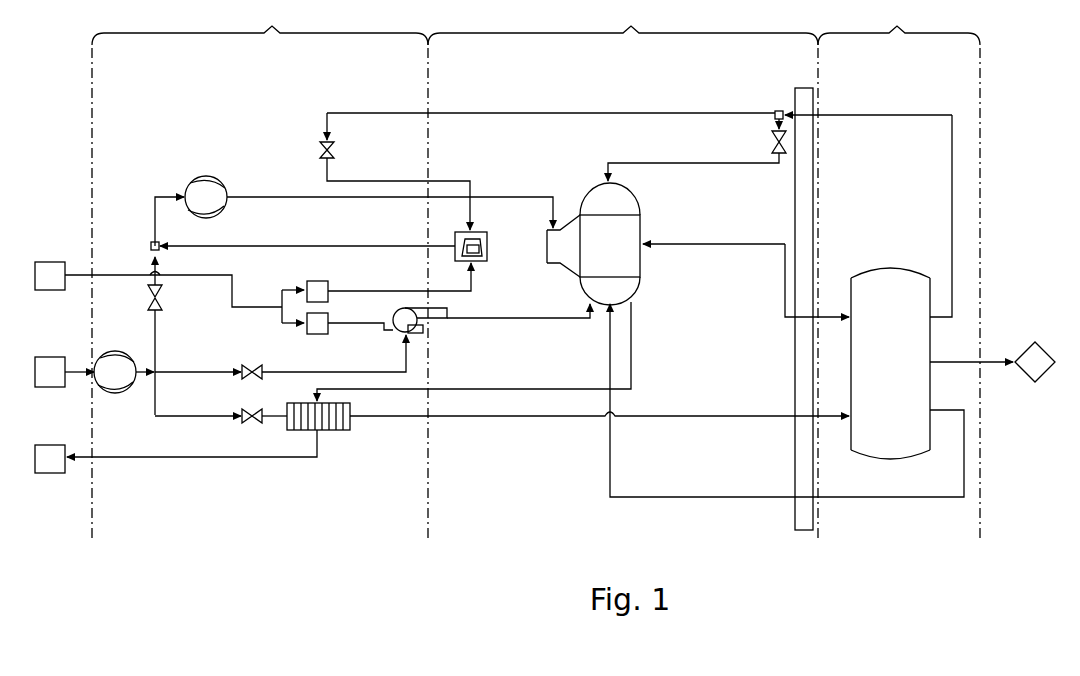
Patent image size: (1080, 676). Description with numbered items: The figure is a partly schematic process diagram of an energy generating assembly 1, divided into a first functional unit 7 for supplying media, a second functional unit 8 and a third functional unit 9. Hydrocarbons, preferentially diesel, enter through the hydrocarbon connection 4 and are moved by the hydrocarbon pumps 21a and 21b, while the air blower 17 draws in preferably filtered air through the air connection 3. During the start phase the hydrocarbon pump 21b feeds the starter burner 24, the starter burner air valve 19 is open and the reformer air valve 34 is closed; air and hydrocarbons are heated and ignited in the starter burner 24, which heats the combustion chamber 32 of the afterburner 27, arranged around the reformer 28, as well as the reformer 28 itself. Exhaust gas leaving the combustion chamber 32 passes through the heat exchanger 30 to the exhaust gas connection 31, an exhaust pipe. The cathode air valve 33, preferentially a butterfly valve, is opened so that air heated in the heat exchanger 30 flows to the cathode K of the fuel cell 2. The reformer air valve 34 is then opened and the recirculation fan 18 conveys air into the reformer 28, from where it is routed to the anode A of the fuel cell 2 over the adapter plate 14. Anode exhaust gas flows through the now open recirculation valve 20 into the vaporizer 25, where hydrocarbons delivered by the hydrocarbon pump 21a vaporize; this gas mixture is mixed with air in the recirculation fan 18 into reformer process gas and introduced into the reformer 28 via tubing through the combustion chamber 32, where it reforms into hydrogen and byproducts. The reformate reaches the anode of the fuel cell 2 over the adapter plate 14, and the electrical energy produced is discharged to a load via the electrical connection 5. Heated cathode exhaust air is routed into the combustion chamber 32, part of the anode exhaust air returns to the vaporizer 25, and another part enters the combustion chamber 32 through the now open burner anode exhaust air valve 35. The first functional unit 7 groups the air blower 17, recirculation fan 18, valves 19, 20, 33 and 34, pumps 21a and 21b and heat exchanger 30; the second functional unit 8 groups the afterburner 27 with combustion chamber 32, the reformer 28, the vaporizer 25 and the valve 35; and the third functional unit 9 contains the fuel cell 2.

The energy generating assembly 1 is at (133, 571).
The fuel cell 2 is at (918, 456).
The air connection 3 is at (64, 372).
The hydrocarbon connection 4 is at (169, 292).
The electrical connection 5 is at (992, 362).
The first functional unit 7 is at (260, 273).
The second functional unit 8 is at (623, 273).
The third functional unit 9 is at (899, 273).
The adapter plate 14 is at (795, 515).
The air blower 17 is at (122, 350).
The recirculation fan 18 is at (212, 176).
The starter burner air valve 19 is at (248, 378).
The recirculation valve 20 is at (323, 145).
The hydrocarbon pump 21a is at (307, 285).
The hydrocarbon pump 21b is at (330, 332).
The starter burner 24 is at (420, 328).
The vaporizer 25 is at (455, 240).
The afterburner 27 is at (590, 186).
The reformer 28 is at (645, 240).
The heat exchanger 30 is at (340, 432).
The exhaust gas connection 31 is at (176, 451).
The combustion chamber 32 is at (636, 205).
The cathode air valve 33 is at (248, 421).
The reformer air valve 34 is at (160, 292).
The burner anode exhaust air valve 35 is at (772, 143).